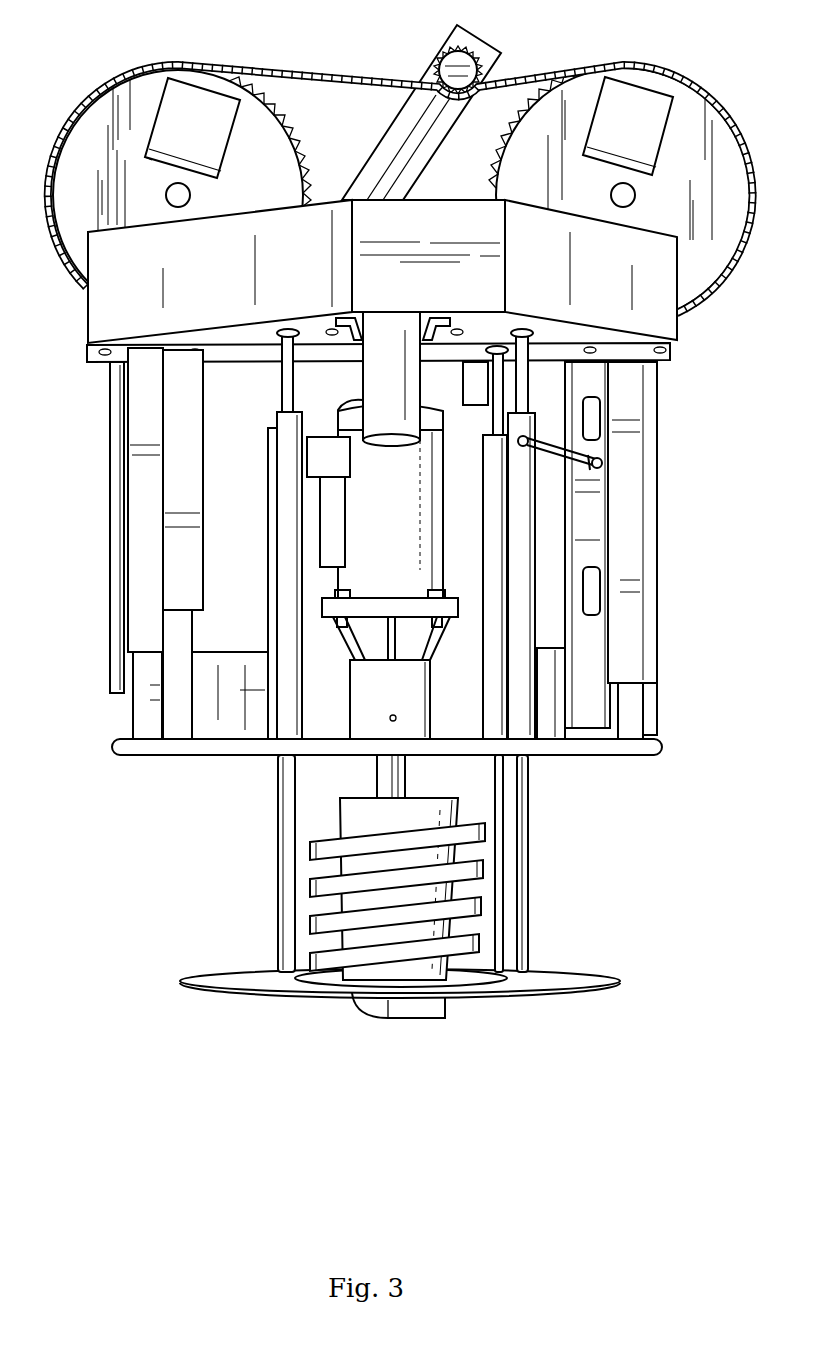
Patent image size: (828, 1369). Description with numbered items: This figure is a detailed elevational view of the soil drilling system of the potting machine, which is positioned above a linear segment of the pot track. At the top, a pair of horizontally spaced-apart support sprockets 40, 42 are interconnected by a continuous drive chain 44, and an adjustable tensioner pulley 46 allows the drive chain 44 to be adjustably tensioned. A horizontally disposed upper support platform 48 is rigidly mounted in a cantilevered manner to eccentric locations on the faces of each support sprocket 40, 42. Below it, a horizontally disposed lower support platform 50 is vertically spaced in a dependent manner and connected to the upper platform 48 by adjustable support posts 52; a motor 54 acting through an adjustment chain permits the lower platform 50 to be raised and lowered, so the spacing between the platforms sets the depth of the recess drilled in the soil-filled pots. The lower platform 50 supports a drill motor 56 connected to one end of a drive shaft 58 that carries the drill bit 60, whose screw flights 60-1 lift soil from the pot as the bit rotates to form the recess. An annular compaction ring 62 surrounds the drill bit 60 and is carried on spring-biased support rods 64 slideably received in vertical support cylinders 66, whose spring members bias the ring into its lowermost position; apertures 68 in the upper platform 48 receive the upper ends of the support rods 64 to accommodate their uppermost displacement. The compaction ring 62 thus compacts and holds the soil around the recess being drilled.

The support sprocket 40 is at (88, 201).
The support sprocket 42 is at (598, 201).
The drive chain 44 is at (460, 58).
The tensioner pulley 46 is at (262, 75).
The upper support platform 48 is at (134, 326).
The lower support platform 50 is at (653, 756).
The adjustable support posts 52 is at (135, 510).
The motor 54 is at (399, 392).
The drill motor 56 is at (404, 552).
The drive shaft 58 is at (398, 780).
The drill bit 60 is at (432, 975).
The screw flights 60-1 is at (310, 928).
The compaction ring 62 is at (180, 982).
The support rods 64 is at (292, 825).
The support cylinders 66 is at (287, 500).
The apertures 68 is at (280, 330).